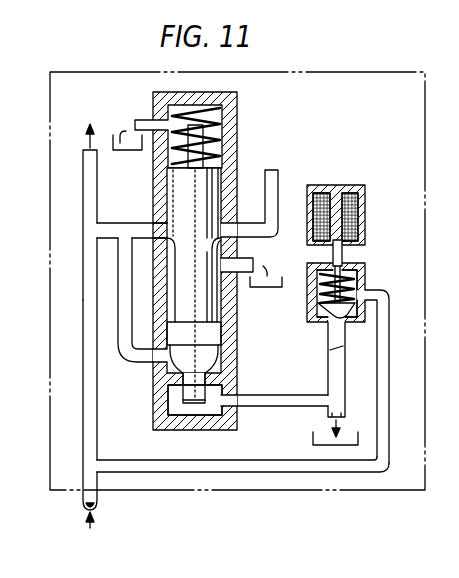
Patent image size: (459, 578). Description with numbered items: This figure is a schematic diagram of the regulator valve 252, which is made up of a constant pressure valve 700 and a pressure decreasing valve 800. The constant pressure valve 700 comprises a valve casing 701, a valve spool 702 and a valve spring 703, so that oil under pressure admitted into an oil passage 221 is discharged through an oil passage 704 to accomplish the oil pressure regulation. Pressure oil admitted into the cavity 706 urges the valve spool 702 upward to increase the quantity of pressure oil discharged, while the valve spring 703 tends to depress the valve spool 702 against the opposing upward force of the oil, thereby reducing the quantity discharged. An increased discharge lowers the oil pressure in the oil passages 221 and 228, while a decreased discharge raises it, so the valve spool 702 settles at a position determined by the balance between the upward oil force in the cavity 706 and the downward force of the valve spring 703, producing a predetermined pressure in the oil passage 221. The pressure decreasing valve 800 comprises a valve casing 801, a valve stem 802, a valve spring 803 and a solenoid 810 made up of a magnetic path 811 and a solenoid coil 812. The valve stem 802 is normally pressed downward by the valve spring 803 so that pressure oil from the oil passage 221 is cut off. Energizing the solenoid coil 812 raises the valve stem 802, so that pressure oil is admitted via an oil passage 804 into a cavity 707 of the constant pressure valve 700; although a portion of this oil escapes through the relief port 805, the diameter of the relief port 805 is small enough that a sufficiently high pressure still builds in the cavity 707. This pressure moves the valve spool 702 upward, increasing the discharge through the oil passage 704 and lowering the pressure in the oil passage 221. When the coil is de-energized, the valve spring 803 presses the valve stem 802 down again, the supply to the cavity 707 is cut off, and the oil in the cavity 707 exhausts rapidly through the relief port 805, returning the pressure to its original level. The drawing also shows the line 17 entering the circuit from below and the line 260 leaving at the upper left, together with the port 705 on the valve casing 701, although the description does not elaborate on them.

The inlet line 17 is at (86, 535).
The oil passage 221 is at (97, 423).
The oil passage 228 is at (292, 168).
The regulator valve 252 is at (50, 300).
The outlet conduit 260 is at (91, 202).
The constant pressure valve 700 is at (148, 62).
The valve casing 701 is at (233, 92).
The valve spool 702 is at (173, 193).
The valve spring 703 is at (228, 126).
The oil passage 704 is at (250, 257).
The port 705 is at (150, 118).
The cavity 706 is at (153, 358).
The cavity 707 is at (183, 431).
The pressure decreasing valve 800 is at (405, 140).
The valve casing 801 is at (367, 284).
The valve stem 802 is at (343, 257).
The valve spring 803 is at (360, 277).
The oil passage 804 is at (262, 394).
The relief port 805 is at (327, 414).
The solenoid 810 is at (364, 202).
The magnetic path 811 is at (343, 191).
The solenoid coil 812 is at (362, 198).